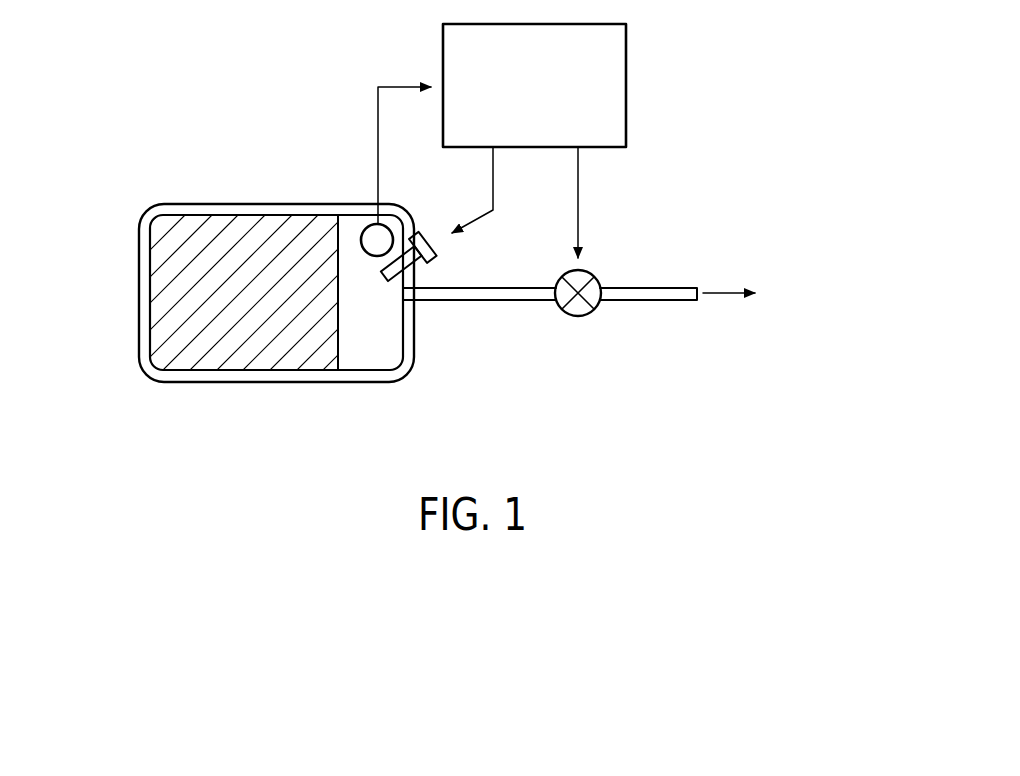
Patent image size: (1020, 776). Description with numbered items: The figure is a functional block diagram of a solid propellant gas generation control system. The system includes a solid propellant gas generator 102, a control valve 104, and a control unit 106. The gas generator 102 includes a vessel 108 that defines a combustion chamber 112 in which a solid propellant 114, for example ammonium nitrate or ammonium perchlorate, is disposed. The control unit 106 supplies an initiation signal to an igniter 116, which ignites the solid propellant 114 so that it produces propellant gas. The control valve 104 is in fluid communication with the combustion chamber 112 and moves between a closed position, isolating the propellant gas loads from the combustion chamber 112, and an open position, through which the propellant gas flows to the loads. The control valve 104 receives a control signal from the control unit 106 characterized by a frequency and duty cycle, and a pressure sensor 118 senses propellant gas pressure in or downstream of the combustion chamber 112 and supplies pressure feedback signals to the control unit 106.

The solid propellant gas generator 102 is at (227, 203).
The control valve 104 is at (575, 316).
The control unit 106 is at (626, 75).
The vessel 108 is at (138, 270).
The combustion chamber 112 is at (305, 335).
The solid propellant 114 is at (286, 307).
The igniter 116 is at (427, 228).
The pressure sensor 118 is at (368, 223).